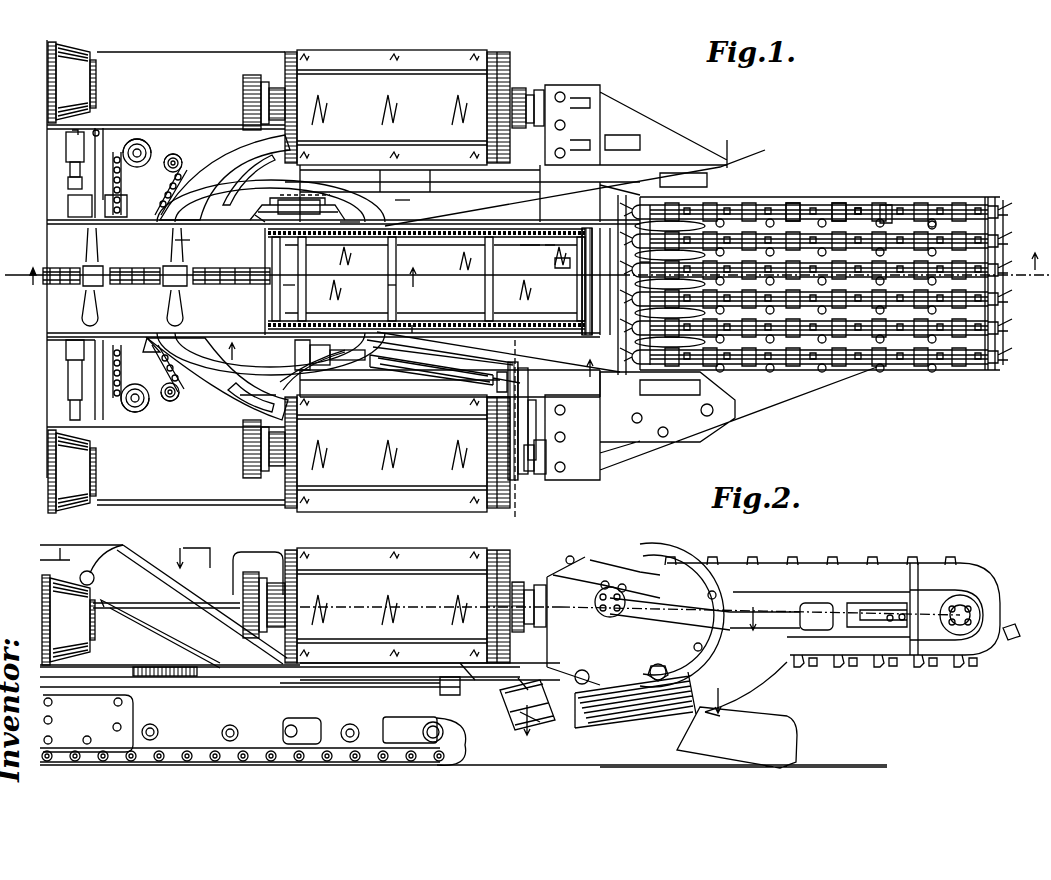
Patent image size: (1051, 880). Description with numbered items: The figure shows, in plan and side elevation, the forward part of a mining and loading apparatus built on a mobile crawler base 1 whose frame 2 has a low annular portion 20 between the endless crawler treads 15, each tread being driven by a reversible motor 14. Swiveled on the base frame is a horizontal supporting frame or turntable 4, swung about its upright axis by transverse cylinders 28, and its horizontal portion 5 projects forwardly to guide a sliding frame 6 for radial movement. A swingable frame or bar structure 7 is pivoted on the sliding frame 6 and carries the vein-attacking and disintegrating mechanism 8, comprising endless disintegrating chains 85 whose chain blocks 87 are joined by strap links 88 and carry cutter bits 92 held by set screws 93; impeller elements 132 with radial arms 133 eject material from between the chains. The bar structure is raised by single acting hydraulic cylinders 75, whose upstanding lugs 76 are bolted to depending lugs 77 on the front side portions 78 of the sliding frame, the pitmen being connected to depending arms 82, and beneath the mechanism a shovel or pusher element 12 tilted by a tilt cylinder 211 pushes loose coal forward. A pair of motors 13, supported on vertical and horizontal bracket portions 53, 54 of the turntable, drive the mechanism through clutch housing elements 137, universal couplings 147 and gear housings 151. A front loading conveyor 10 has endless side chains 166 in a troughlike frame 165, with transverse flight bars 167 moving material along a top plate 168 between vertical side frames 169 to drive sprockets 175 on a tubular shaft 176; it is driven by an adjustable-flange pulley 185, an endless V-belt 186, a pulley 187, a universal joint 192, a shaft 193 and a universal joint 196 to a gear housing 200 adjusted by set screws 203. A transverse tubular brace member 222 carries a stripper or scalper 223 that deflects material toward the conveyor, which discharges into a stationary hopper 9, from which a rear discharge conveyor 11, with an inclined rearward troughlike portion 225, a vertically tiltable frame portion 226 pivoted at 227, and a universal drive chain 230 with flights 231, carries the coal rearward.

In FIG. 2, the mobile base 1 is at (133, 728).
In FIG. 1, the frame 2 is at (175, 413).
In FIG. 1, the horizontal supporting frame or turntable 4 is at (223, 402).
In FIG. 2, the horizontal supporting frame or turntable 4 is at (163, 663).
In FIG. 1, the horizontal portion 5 is at (724, 261).
In FIG. 2, the horizontal portion 5 is at (523, 678).
In FIG. 1, the sliding frame or support 6 is at (400, 205).
In FIG. 2, the sliding frame or support 6 is at (620, 530).
In FIG. 1, the swingable frame or bar structure 7 is at (777, 180).
In FIG. 2, the swingable frame or bar structure 7 is at (723, 580).
In FIG. 1, the vein-attacking and disintegrating mechanism 8 is at (950, 206).
In FIG. 2, the vein-attacking and disintegrating mechanism 8 is at (957, 561).
In FIG. 1, the hopper 9 is at (271, 178).
In FIG. 1, the front loading conveyor 10 is at (548, 245).
In FIG. 1, the rear discharge conveyor 11 is at (28, 289).
In FIG. 1, the shovel or material pushing element 12 is at (640, 262).
In FIG. 2, the shovel or material pushing element 12 is at (787, 730).
In FIG. 1, the motors 13 is at (415, 62).
In FIG. 2, the motors 13 is at (457, 577).
In FIG. 1, the reversible motors 14 is at (76, 62).
In FIG. 2, the reversible motors 14 is at (90, 645).
In FIG. 2, the endless crawler treads 15 is at (227, 755).
In FIG. 2, the annular portion 20 is at (470, 663).
In FIG. 1, the transverse cylinders 28 is at (70, 207).
In FIG. 1, the vertical bracket portions 53 is at (430, 170).
In FIG. 2, the horizontal bracket portions 54 is at (363, 673).
In FIG. 2, the single acting hydraulic cylinders 75 is at (583, 718).
In FIG. 2, the upstanding lugs 76 is at (598, 692).
In FIG. 2, the depending lugs 77 is at (653, 673).
In FIG. 1, the front side portions 78 is at (590, 190).
In FIG. 2, the front side portions 78 is at (543, 557).
In FIG. 2, the depending arms 82 is at (773, 667).
In FIG. 1, the endless disintegrating chains 85 is at (883, 237).
In FIG. 2, the endless disintegrating chains 85 is at (972, 660).
In FIG. 1, the chain blocks 87 is at (838, 205).
In FIG. 2, the chain blocks 87 is at (930, 665).
In FIG. 1, the strap links 88 is at (858, 210).
In FIG. 1, the cutter bits 92 is at (795, 203).
In FIG. 2, the cutter bits 92 is at (787, 563).
In FIG. 1, the set screws 93 is at (935, 210).
In FIG. 2, the set screws 93 is at (895, 668).
In FIG. 1, the impeller elements 132 is at (708, 212).
In FIG. 1, the radial arms 133 is at (690, 312).
In FIG. 1, the housing element 137 is at (255, 75).
In FIG. 2, the housing element 137 is at (243, 618).
In FIG. 1, the universal coupling 147 is at (520, 90).
In FIG. 2, the universal coupling 147 is at (547, 628).
In FIG. 1, the gear housings 151 is at (683, 130).
In FIG. 2, the gear housings 151 is at (637, 563).
In FIG. 1, the troughlike frame 165 is at (347, 222).
In FIG. 1, the endless side chains 166 is at (425, 281).
In FIG. 1, the transverse flight bars 167 is at (392, 291).
In FIG. 1, the top plate 168 is at (525, 245).
In FIG. 1, the vertical side frames 169 is at (260, 221).
In FIG. 1, the drive sprockets 175 is at (302, 240).
In FIG. 1, the tubular shaft 176 is at (285, 290).
In FIG. 1, the adjustable-flange pulley 185 is at (510, 466).
In FIG. 2, the adjustable-flange pulley 185 is at (510, 628).
In FIG. 1, the endless V-belt 186 is at (520, 417).
In FIG. 2, the endless V-belt 186 is at (513, 595).
In FIG. 1, the pulley 187 is at (483, 360).
In FIG. 1, the universal joint 192 is at (495, 378).
In FIG. 1, the shaft 193 is at (398, 363).
In FIG. 1, the universal joint 196 is at (333, 372).
In FIG. 1, the gear housing 200 is at (257, 398).
In FIG. 1, the set screws 203 is at (325, 343).
In FIG. 2, the tilt cylinder 211 is at (520, 717).
In FIG. 1, the transverse tubular brace member 222 is at (556, 262).
In FIG. 1, the stripper or scalper 223 is at (605, 240).
In FIG. 1, the inclined rearward troughlike portion 225 is at (147, 332).
In FIG. 2, the inclined rearward troughlike portion 225 is at (180, 600).
In FIG. 1, the vertically tiltable rearward troughlike frame portion 226 is at (77, 340).
In FIG. 2, the vertically tiltable rearward troughlike frame portion 226 is at (70, 550).
In FIG. 2, the pivot 227 is at (92, 573).
In FIG. 1, the universal drive chain 230 is at (130, 283).
In FIG. 1, the flights 231 is at (180, 238).